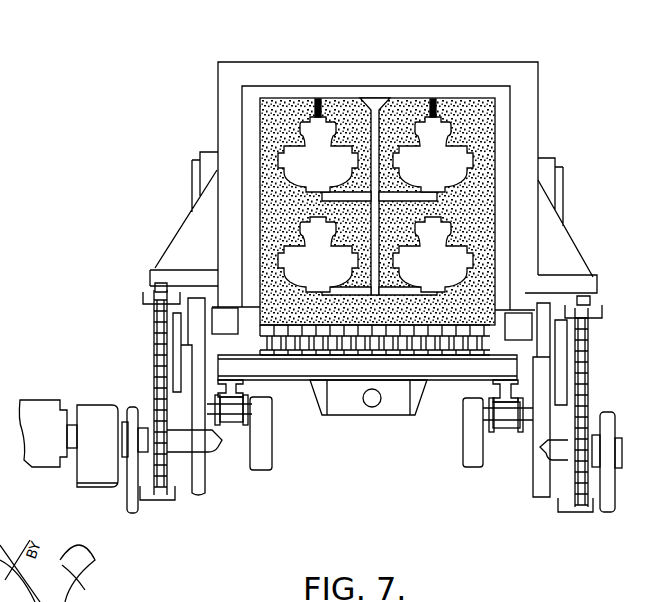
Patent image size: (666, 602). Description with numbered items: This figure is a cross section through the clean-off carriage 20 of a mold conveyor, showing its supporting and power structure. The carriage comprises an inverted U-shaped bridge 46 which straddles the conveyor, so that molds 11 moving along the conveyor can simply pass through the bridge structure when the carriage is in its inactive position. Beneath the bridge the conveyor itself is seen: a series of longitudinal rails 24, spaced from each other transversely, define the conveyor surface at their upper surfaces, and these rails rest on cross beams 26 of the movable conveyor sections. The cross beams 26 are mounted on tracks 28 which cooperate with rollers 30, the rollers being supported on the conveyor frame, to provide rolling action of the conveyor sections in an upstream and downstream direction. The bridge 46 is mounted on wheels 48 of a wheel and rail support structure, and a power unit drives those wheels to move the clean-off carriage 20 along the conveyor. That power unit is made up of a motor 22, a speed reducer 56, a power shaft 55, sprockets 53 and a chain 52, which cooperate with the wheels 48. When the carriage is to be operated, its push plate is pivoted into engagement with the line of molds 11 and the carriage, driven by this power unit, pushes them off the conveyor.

The mold 11 is at (410, 130).
The inverted U-shaped bridge 46 is at (505, 60).
The clean-off carriage 20 is at (665, 193).
The wheel 48 is at (548, 307).
The longitudinal rails 24 is at (258, 340).
The cross beams 26 is at (260, 378).
The tracks 28 is at (497, 383).
The rollers 30 is at (512, 430).
The chain 52 is at (160, 350).
The sprockets 53 is at (155, 323).
The power shaft 55 is at (210, 452).
The motor 22 is at (32, 398).
The speed reducer 56 is at (85, 468).